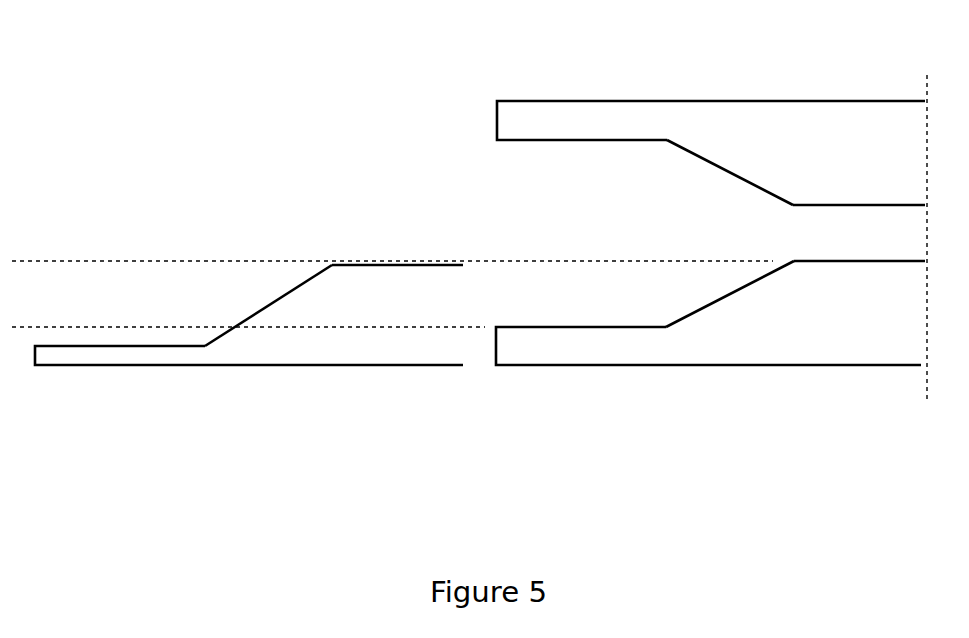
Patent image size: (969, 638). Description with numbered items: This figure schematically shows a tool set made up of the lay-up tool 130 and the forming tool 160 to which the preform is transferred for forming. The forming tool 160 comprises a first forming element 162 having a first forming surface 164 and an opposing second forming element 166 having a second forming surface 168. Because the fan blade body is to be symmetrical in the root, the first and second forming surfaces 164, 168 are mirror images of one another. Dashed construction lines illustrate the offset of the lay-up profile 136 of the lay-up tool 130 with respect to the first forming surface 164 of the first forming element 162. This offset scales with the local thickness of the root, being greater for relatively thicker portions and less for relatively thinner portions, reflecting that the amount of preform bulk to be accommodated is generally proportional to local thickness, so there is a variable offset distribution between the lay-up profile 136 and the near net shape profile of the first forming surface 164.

The lay-up tool 130 is at (249, 316).
The lay-up profile 136 is at (285, 297).
The forming tool 160 is at (707, 53).
The first forming element 162 is at (710, 349).
The first forming surface 164 is at (708, 302).
The second forming element 166 is at (711, 127).
The second forming surface 168 is at (717, 165).